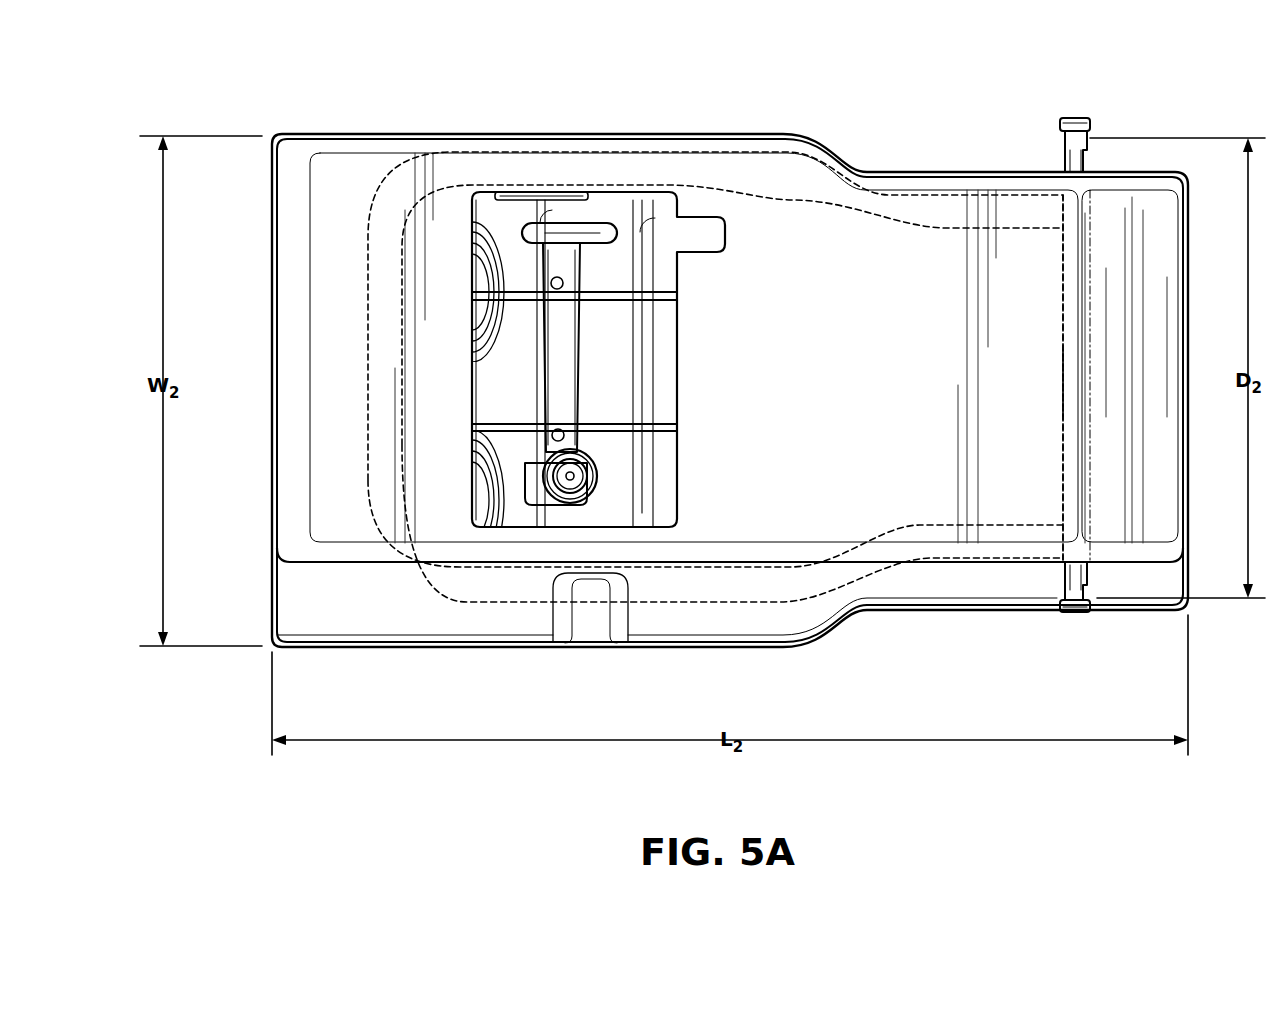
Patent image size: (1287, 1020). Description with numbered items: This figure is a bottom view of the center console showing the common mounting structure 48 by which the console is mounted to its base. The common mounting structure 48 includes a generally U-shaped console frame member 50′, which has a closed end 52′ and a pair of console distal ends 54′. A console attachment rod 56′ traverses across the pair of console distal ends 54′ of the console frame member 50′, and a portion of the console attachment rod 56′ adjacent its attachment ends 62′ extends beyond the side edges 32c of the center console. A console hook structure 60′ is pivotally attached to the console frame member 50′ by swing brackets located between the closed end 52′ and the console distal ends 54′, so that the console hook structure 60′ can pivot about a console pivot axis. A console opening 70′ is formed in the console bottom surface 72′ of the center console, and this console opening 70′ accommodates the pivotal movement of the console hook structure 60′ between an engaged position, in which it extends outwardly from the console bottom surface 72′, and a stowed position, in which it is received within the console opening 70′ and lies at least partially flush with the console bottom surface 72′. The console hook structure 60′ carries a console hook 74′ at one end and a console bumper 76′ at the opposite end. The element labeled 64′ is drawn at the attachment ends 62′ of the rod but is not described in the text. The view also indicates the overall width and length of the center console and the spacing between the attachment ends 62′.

The common mounting structure 48 is at (729, 115).
The console frame member 50′ is at (512, 168).
The closed end 52′ is at (368, 393).
The console distal ends 54′ is at (1030, 212).
The console attachment rod 56′ is at (1068, 385).
The console hook structure 60′ is at (580, 375).
The attachment ends 62′ is at (1063, 129).
The valve cap 64′ is at (1088, 123).
The console opening 70′ is at (678, 332).
The console bottom surface 72′ is at (785, 350).
The console hook 74′ is at (596, 232).
The console bumper 76′ is at (592, 478).
The side edges 32c is at (960, 172).